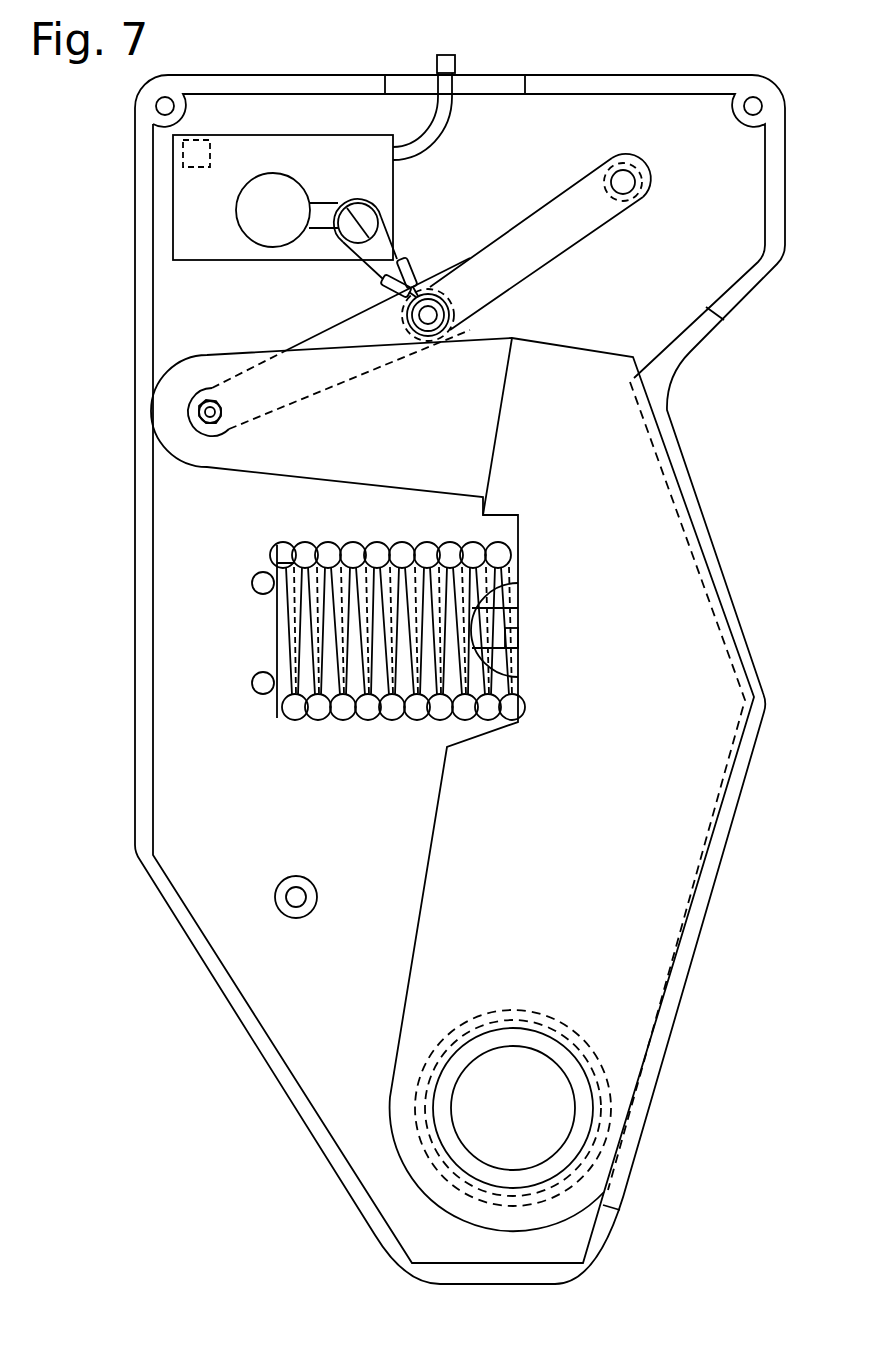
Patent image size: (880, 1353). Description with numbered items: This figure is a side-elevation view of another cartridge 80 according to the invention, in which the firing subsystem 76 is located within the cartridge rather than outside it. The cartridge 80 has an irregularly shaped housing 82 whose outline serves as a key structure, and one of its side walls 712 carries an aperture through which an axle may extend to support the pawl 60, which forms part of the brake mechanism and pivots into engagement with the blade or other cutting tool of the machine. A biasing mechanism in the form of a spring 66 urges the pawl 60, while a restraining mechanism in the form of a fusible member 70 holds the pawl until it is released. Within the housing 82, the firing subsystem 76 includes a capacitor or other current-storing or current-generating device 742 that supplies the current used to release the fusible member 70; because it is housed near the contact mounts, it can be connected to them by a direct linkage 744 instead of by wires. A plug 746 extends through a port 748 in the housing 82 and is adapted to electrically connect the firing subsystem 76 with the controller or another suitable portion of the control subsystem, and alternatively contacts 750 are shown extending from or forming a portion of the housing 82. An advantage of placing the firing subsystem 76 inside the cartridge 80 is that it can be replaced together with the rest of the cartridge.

The pawl 60 is at (629, 684).
The spring 66 is at (362, 718).
The fusible member 70 is at (398, 260).
The firing subsystem 76 is at (250, 263).
The cartridge 80 is at (182, 984).
The housing 82 is at (182, 933).
The side wall 712 is at (344, 994).
The capacitor or other current-storing or current-generating device 742 is at (296, 222).
The direct linkage 744 is at (330, 203).
The plug 746 is at (437, 62).
The port 748 is at (502, 83).
The contacts 750 is at (183, 163).